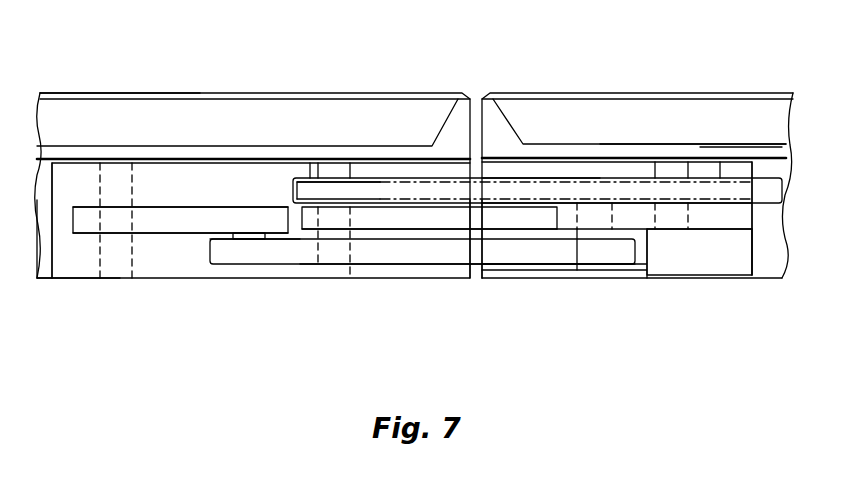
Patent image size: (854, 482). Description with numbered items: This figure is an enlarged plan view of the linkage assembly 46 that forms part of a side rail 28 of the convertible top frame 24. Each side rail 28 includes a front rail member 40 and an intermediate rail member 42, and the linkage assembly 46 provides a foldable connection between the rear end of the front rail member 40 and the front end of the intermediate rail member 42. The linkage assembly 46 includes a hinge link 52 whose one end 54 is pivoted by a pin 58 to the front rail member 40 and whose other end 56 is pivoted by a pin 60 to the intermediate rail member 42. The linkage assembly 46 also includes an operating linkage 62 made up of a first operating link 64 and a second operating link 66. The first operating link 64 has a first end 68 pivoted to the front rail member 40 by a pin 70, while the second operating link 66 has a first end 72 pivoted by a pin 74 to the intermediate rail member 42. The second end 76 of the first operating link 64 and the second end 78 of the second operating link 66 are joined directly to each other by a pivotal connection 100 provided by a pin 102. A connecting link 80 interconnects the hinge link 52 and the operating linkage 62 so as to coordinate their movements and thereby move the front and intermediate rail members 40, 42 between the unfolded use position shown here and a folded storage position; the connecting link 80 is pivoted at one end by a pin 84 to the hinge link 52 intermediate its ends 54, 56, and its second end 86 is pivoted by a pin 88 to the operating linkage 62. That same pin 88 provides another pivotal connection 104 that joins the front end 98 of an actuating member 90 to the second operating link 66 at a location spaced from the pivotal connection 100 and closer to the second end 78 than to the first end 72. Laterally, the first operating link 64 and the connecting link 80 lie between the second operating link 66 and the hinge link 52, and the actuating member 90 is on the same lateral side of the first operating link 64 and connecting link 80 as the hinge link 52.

The convertible top frame 24 is at (263, 73).
The side rail 28 is at (39, 281).
The front rail member 40 is at (40, 95).
The intermediate rail member 42 is at (713, 142).
The linkage assembly 46 is at (478, 290).
The hinge link 52 is at (506, 177).
The one end of hinge link 54 is at (296, 178).
The other end of hinge link 56 is at (720, 168).
The pin 58 is at (328, 165).
The pin 60 is at (660, 165).
The operating linkage 62 is at (244, 266).
The first operating link 64 is at (174, 200).
The second operating link 66 is at (402, 270).
The first end of first operating link 68 is at (83, 222).
The pin 70 is at (139, 175).
The first end of second operating link 72 is at (553, 272).
The pin 74 is at (577, 272).
The second end of first operating link 76 is at (218, 207).
The second end of second operating link 78 is at (316, 238).
The connecting link 80 is at (412, 214).
The pin 84 is at (525, 203).
The second end of connecting link 86 is at (387, 232).
The pin 88 is at (360, 222).
The actuating member 90 is at (765, 158).
The front end of actuating member 98 is at (310, 176).
The pivotal connection 100 is at (230, 258).
The pin 102 is at (233, 234).
The pivotal connection 104 is at (356, 192).